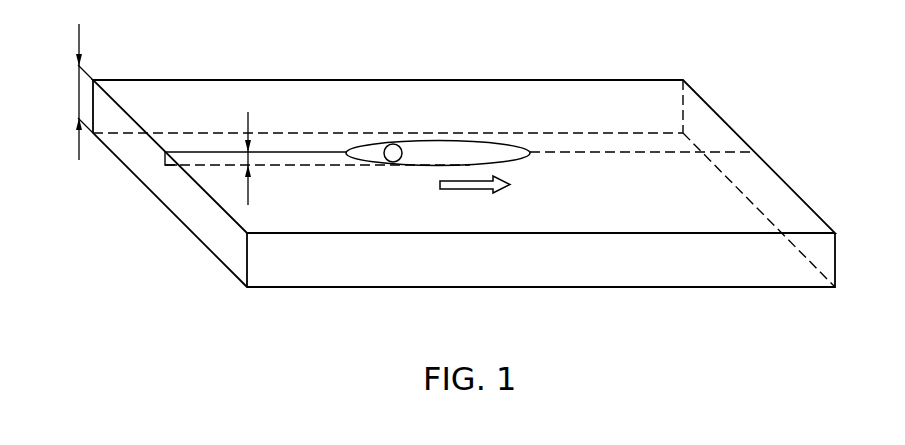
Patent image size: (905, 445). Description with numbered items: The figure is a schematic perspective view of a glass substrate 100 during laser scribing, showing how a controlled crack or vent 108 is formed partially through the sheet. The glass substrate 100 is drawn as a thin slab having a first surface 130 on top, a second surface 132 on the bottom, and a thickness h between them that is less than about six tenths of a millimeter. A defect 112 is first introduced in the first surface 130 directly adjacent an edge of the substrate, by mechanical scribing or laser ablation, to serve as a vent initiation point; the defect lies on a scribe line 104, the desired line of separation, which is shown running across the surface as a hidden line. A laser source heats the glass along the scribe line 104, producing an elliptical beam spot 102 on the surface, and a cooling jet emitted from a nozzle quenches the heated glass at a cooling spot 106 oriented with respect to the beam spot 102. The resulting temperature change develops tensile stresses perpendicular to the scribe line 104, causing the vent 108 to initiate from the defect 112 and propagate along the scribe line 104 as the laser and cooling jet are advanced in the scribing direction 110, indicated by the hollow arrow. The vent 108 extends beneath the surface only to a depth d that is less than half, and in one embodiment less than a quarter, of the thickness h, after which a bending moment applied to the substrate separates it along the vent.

The glass substrate 100 is at (650, 54).
The elliptical beam spot 102 is at (500, 140).
The scribe line 104 is at (622, 153).
The cooling spot 106 is at (393, 144).
The vent 108 is at (310, 152).
The scribing direction 110 is at (473, 192).
The defect 112 is at (170, 151).
The first surface 130 is at (715, 222).
The second surface 132 is at (678, 288).
The thickness h is at (79, 92).
The depth d is at (248, 118).